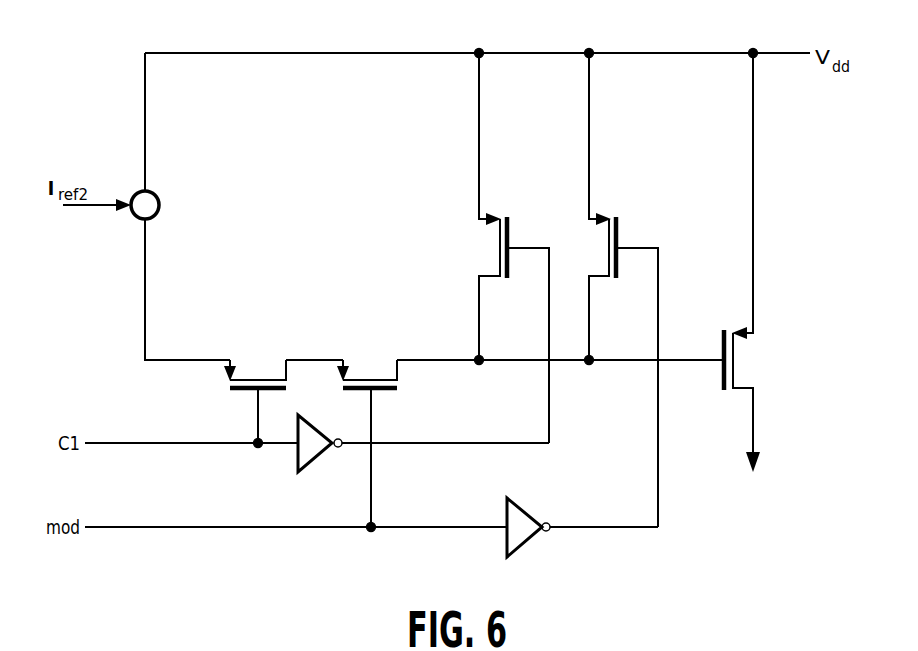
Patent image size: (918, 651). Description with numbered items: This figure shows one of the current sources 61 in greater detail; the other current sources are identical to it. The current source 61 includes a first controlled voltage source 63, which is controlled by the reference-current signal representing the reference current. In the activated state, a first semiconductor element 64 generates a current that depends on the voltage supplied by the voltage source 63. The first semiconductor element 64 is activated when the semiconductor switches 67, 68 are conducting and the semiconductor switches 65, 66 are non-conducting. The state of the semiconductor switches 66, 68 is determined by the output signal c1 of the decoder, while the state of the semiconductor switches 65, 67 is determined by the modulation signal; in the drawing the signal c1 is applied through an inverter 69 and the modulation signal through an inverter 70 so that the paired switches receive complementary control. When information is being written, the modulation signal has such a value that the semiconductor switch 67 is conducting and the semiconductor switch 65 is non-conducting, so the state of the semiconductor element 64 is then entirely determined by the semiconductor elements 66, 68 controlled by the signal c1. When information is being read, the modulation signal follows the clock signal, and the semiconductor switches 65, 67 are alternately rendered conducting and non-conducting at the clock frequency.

The current source 61 is at (621, 565).
The first controlled voltage source 63 is at (161, 200).
The first semiconductor element 64 is at (740, 363).
The semiconductor switch 65 is at (620, 228).
The semiconductor switch 66 is at (490, 253).
The semiconductor switch 67 is at (368, 368).
The semiconductor switch 68 is at (254, 368).
The inverter 69 is at (300, 455).
The inverter 70 is at (510, 538).